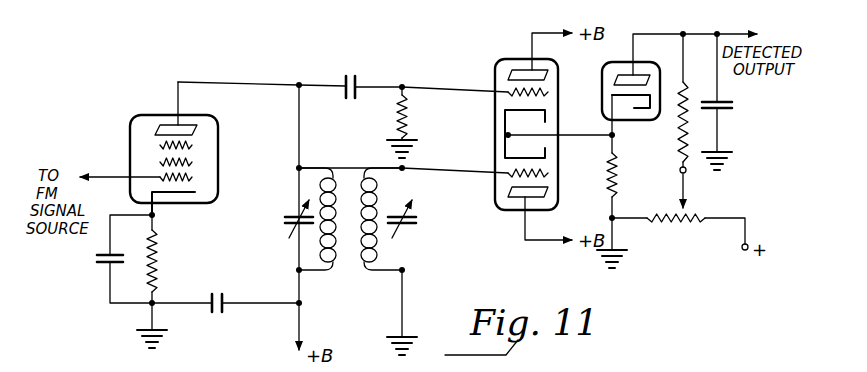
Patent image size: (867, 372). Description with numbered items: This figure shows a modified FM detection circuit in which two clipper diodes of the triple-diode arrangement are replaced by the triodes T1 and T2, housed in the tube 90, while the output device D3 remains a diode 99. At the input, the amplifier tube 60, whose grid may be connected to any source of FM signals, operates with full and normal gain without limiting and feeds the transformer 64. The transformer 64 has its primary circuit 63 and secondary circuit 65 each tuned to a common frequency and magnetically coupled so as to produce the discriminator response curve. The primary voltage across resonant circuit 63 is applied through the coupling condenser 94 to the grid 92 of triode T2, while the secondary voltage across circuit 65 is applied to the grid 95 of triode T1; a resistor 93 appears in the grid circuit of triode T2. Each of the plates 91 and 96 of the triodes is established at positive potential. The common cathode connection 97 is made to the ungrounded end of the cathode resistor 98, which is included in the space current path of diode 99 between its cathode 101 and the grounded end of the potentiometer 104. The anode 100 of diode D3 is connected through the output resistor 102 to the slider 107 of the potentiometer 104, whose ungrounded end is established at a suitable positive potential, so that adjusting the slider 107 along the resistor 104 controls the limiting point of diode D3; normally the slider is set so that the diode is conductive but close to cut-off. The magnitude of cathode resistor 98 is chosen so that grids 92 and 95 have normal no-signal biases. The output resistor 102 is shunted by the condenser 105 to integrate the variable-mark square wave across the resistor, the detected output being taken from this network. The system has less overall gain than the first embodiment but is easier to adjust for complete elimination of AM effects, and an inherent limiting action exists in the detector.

The amplifier tube 60 is at (228, 110).
The primary circuit 63 is at (310, 182).
The transformer 64 is at (374, 278).
The secondary circuit 65 is at (398, 190).
The tube 90 is at (559, 95).
The plate 91 is at (540, 66).
The grid 92 is at (506, 96).
The grid resistor 93 is at (412, 110).
The coupling condenser 94 is at (357, 73).
The grid 95 is at (550, 173).
The plate 96 is at (550, 193).
The common cathode connection 97 is at (532, 138).
The cathode resistor 98 is at (620, 180).
The diode 99 is at (635, 58).
The anode 100 is at (620, 66).
The cathode 101 is at (636, 110).
The output resistor 102 is at (669, 138).
The potentiometer resistor 104 is at (668, 228).
The condenser 105 is at (734, 102).
The adjustable tap 107 is at (686, 184).
The triode T1 is at (497, 193).
The triode T2 is at (497, 80).
The diode D3 is at (603, 92).